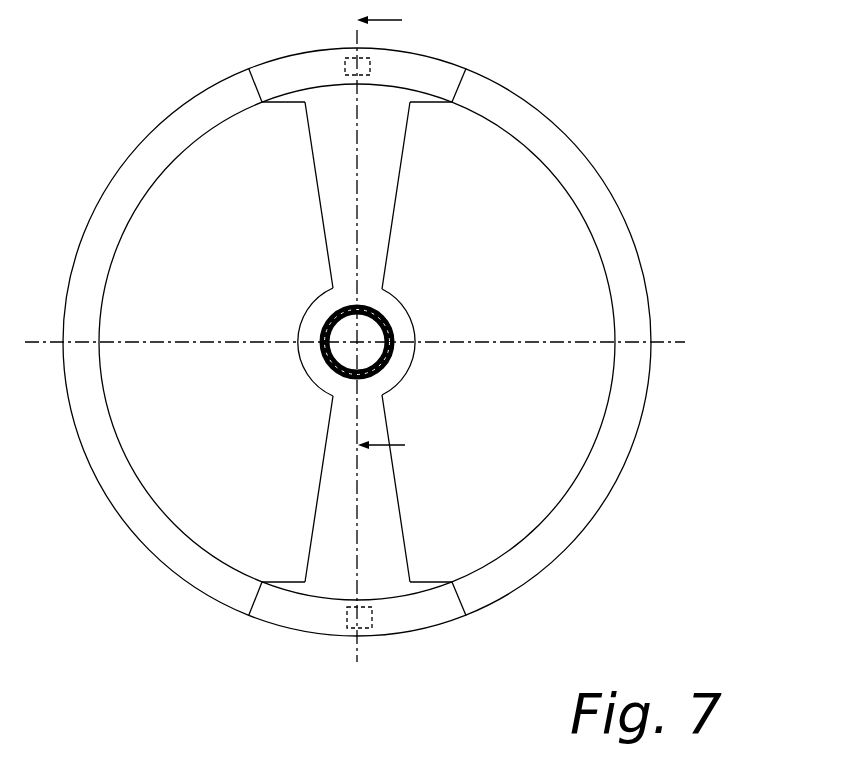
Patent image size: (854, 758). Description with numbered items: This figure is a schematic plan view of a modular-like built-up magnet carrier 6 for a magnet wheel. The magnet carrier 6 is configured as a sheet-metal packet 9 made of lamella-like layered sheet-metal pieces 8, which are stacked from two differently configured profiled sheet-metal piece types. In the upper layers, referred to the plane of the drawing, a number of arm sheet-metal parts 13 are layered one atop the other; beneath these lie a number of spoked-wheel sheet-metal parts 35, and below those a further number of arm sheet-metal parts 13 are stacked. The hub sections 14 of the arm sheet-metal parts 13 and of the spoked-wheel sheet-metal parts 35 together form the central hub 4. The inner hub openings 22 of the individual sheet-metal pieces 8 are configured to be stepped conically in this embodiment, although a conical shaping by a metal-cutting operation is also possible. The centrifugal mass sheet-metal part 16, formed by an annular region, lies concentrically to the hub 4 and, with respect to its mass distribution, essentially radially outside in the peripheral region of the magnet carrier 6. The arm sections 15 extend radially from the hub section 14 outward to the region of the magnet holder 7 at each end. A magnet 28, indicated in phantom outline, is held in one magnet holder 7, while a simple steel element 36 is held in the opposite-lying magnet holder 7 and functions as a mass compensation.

The hub 4 is at (370, 326).
The magnet carrier 6 is at (355, 334).
The magnet holder 7 is at (357, 342).
The sheet-metal pieces 8 is at (636, 323).
The sheet-metal packet 9 is at (300, 404).
The arm sheet-metal parts 13 is at (395, 203).
The hub section 14 is at (398, 318).
The arm sections 15 is at (387, 485).
The centrifugal mass sheet-metal part 16 is at (357, 342).
The inner hub openings 22 is at (370, 353).
The magnet 28 is at (345, 68).
The spoked-wheel sheet-metal parts 35 is at (608, 277).
The steel element 36 is at (348, 613).